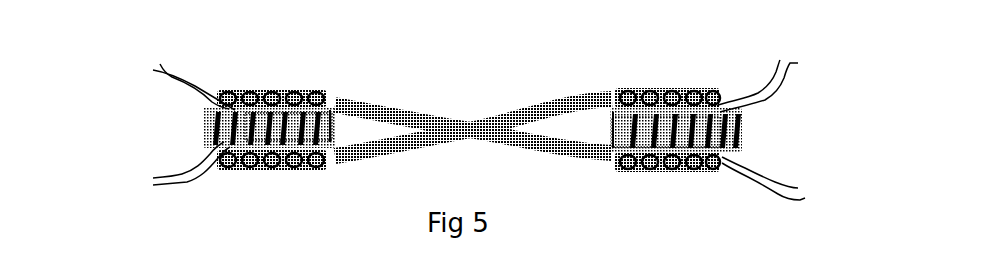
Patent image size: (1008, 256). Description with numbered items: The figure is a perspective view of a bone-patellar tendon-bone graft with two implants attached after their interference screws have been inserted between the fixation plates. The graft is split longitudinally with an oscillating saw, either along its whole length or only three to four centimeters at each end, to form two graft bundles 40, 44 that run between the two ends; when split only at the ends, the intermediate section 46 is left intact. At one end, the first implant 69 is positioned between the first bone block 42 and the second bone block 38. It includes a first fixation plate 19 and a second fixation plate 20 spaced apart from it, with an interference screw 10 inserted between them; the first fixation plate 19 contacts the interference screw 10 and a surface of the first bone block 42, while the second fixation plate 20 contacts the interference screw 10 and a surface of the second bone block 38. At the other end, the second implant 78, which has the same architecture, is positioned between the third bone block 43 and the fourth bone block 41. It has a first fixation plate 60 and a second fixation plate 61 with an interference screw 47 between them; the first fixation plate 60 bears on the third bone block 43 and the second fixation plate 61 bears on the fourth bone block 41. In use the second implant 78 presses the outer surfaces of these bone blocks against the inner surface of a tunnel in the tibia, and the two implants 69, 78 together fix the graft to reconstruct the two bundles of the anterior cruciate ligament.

The interference screw 10 is at (202, 131).
The first fixation plate 19 is at (315, 108).
The second fixation plate 20 is at (315, 145).
The second bone block 38 is at (257, 157).
The graft bundle 40 is at (343, 165).
The fourth bone block 41 is at (682, 167).
The first bone block 42 is at (233, 110).
The third bone block 43 is at (690, 93).
The graft bundle 44 is at (342, 97).
The intermediate section 46 is at (472, 127).
The interference screw 47 is at (740, 143).
The first fixation plate 60 is at (615, 108).
The second fixation plate 61 is at (625, 147).
The first implant 69 is at (131, 124).
The second implant 78 is at (796, 107).